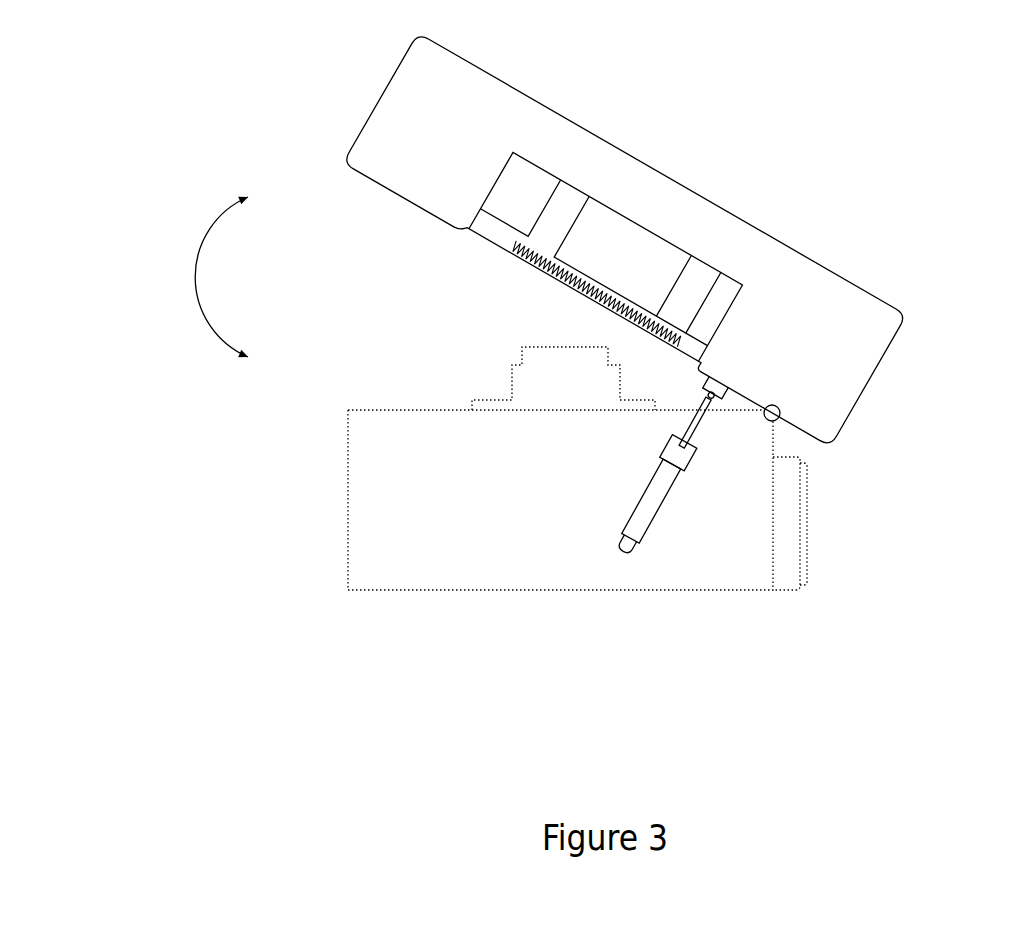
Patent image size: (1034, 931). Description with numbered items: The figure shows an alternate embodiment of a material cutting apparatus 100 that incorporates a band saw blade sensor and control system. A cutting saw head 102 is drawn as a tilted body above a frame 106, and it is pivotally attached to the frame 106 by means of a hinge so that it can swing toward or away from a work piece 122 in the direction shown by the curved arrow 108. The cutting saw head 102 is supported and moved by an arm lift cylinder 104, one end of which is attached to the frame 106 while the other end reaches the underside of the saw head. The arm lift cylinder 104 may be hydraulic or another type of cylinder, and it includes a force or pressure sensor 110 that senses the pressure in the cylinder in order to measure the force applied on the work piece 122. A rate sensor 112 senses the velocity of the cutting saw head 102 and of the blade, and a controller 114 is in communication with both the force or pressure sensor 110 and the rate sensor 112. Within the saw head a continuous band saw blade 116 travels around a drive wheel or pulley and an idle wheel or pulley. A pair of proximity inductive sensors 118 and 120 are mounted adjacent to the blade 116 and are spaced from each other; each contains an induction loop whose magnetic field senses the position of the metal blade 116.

The material cutting apparatus 100 is at (815, 155).
The cutting saw head 102 is at (858, 302).
The arm lift cylinder 104 is at (662, 512).
The frame 106 is at (432, 555).
The arrow 108 is at (187, 267).
The force or pressure sensor 110 is at (624, 560).
The rate sensor 112 is at (886, 388).
The controller 114 is at (813, 537).
The band saw blade 116 is at (553, 270).
The proximity inductive sensor 118 is at (513, 243).
The proximity inductive sensor 120 is at (650, 317).
The work piece 122 is at (563, 347).